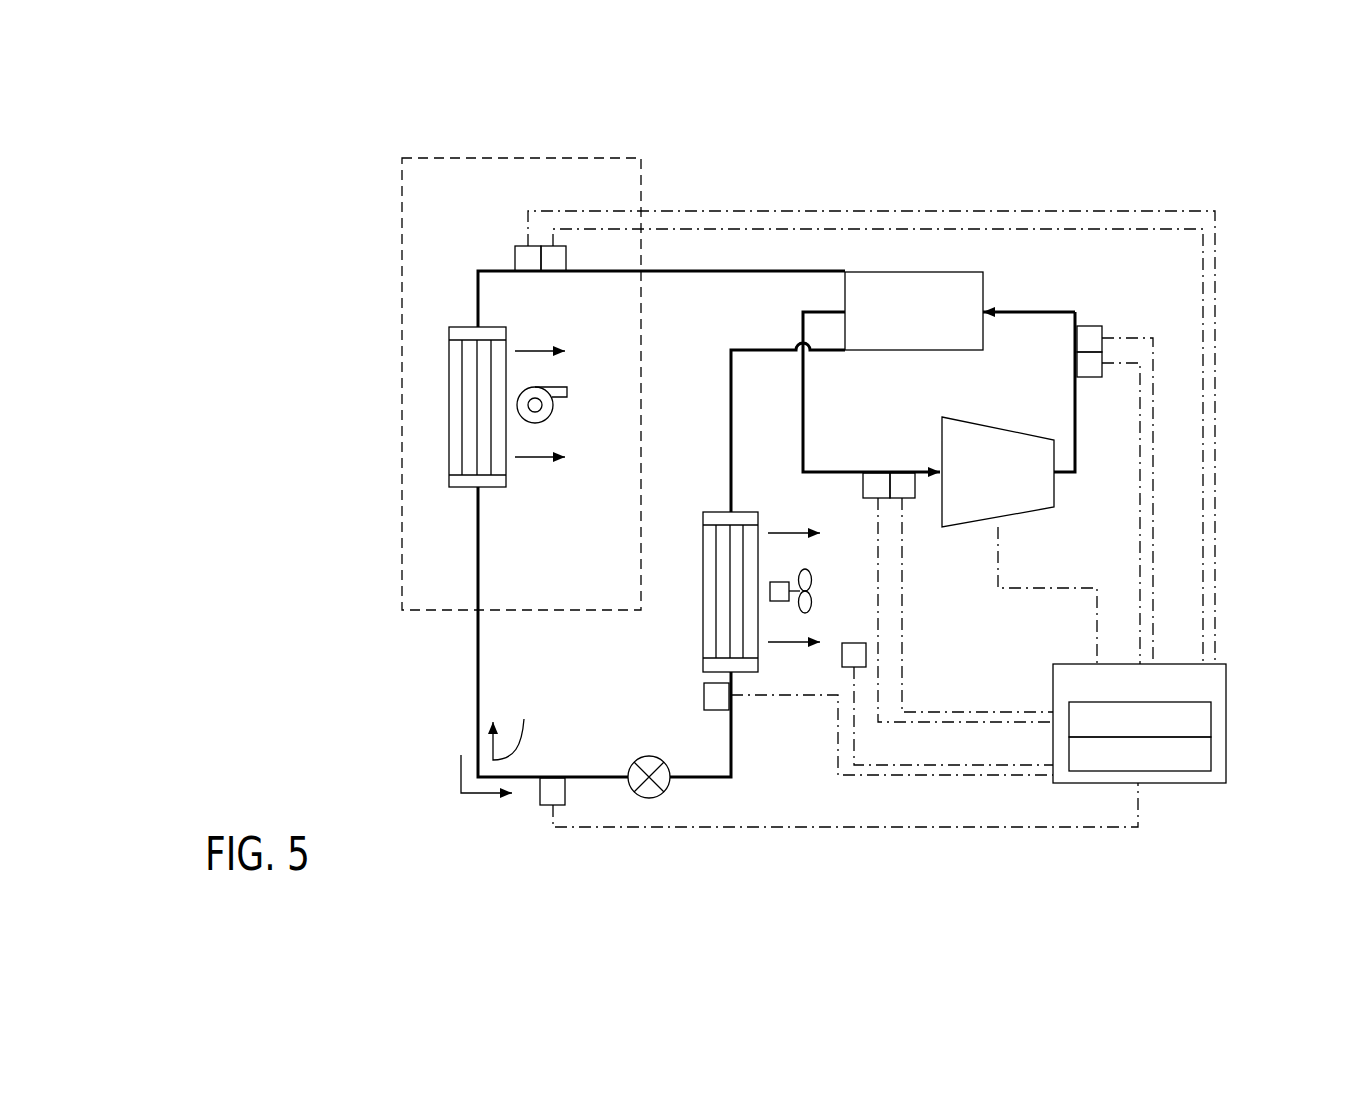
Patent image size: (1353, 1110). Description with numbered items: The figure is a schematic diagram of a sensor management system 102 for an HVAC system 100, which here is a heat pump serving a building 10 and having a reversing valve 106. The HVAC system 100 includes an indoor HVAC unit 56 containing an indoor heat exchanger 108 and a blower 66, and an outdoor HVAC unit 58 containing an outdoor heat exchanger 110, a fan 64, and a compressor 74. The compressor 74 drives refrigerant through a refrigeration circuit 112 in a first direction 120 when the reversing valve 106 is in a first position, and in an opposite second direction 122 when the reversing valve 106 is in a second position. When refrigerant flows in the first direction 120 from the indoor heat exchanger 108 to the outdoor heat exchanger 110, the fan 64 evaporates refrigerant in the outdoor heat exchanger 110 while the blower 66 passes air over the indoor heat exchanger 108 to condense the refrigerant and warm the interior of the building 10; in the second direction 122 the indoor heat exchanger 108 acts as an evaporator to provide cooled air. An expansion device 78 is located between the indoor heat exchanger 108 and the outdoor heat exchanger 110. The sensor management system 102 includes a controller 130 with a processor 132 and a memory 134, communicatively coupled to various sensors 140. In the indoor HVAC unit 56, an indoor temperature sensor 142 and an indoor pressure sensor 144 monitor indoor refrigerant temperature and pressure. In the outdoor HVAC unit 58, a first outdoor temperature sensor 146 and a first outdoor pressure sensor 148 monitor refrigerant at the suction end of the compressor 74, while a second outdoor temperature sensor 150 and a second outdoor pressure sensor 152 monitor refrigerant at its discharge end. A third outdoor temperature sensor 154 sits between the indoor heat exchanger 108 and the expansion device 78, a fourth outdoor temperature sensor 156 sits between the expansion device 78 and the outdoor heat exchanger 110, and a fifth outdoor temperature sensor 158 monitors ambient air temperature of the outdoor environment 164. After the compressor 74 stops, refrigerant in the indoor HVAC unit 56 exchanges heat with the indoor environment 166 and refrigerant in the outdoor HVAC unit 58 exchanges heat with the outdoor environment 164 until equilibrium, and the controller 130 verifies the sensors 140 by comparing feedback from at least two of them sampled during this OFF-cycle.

The building 10 is at (890, 357).
The indoor HVAC unit 56 is at (641, 195).
The outdoor HVAC unit 58 is at (986, 680).
The fan 64 is at (806, 570).
The blower 66 is at (548, 419).
The compressor 74 is at (1025, 512).
The expansion device 78 is at (665, 790).
The HVAC system 100 is at (953, 195).
The sensor management system 102 is at (871, 382).
The reversing valve 106 is at (915, 351).
The indoor heat exchanger 108 is at (490, 488).
The outdoor heat exchanger 110 is at (713, 512).
The refrigeration circuit 112 is at (776, 792).
The first direction 120 is at (461, 770).
The second direction 122 is at (518, 725).
The controller 130 is at (1192, 719).
The processor 132 is at (1211, 717).
The memory 134 is at (1211, 752).
The sensors 140 is at (537, 280).
The indoor temperature sensor 142 is at (515, 254).
The indoor pressure sensor 144 is at (566, 263).
The first outdoor temperature sensor 146 is at (863, 481).
The first outdoor pressure sensor 148 is at (905, 498).
The second outdoor temperature sensor 150 is at (1088, 326).
The second outdoor pressure sensor 152 is at (1088, 377).
The third outdoor temperature sensor 154 is at (565, 791).
The fourth outdoor temperature sensor 156 is at (717, 710).
The fifth outdoor temperature sensor 158 is at (851, 643).
The outdoor environment 164 is at (995, 655).
The indoor environment 166 is at (584, 575).